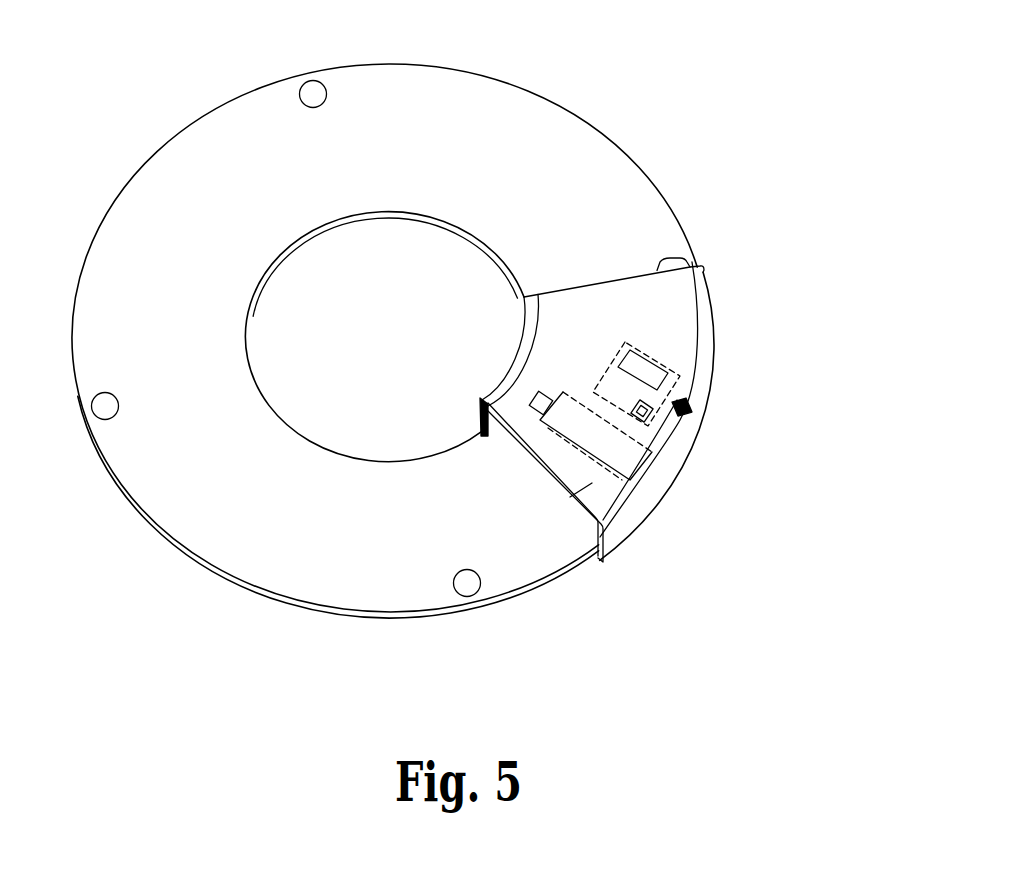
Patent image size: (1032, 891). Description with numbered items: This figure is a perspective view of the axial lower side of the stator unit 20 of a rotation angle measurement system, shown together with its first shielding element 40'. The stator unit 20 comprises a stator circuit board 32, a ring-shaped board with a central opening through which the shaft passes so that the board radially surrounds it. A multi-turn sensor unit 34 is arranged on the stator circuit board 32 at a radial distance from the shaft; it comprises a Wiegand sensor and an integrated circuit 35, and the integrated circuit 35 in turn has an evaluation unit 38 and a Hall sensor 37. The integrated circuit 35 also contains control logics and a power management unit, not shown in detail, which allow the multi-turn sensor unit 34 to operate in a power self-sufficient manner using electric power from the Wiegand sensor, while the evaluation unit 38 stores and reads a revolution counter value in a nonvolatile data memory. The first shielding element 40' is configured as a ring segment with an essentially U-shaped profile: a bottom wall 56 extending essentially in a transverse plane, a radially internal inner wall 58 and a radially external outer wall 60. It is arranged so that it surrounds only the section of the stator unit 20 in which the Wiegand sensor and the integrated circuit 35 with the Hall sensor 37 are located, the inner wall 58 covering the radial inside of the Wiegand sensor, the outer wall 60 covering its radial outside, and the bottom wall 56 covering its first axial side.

The stator unit 20 is at (705, 112).
The stator circuit board 32 is at (173, 187).
The multi-turn sensor unit 34 is at (588, 360).
The integrated circuit 35 is at (690, 410).
The Hall sensor 37 is at (678, 452).
The evaluation unit 38 is at (643, 348).
The first shielding element 40' is at (704, 380).
The bottom wall 56 is at (592, 482).
The inner wall 58 is at (483, 415).
The outer wall 60 is at (623, 518).